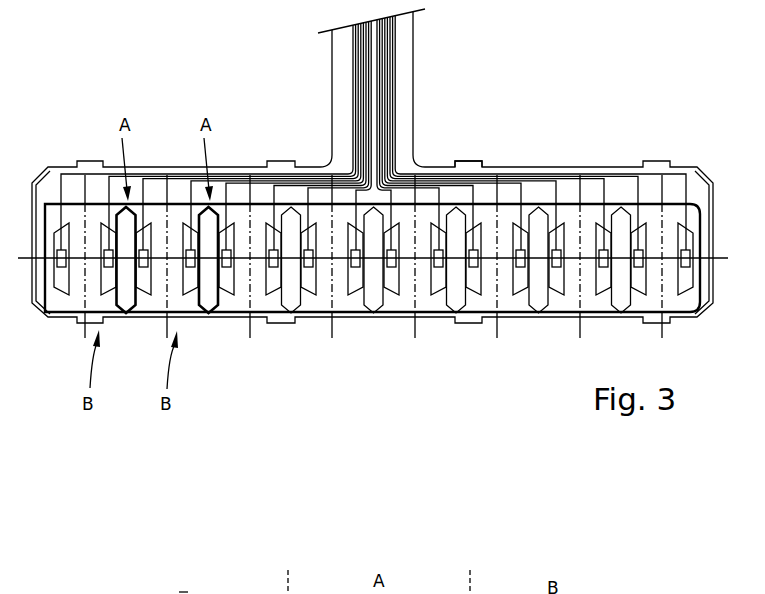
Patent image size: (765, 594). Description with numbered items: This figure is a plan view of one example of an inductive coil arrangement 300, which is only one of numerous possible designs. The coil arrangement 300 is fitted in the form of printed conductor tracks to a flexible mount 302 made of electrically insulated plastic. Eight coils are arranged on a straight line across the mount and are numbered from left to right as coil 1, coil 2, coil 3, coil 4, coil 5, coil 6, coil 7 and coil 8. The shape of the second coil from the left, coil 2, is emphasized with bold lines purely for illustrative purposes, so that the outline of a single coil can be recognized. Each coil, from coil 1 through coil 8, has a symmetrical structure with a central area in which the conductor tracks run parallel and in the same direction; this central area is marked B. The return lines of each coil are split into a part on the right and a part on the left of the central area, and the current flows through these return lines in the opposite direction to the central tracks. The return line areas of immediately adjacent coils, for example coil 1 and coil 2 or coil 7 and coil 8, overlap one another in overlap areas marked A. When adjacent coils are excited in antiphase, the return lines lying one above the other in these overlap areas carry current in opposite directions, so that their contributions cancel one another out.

The coil arrangement 300 is at (573, 115).
The flexible mount 302 is at (469, 163).
The coil 1 is at (85, 256).
The coil 2 is at (167, 256).
The coil 3 is at (250, 256).
The coil 4 is at (332, 256).
The coil 5 is at (415, 256).
The coil 6 is at (497, 256).
The coil 7 is at (580, 256).
The coil 8 is at (662, 256).